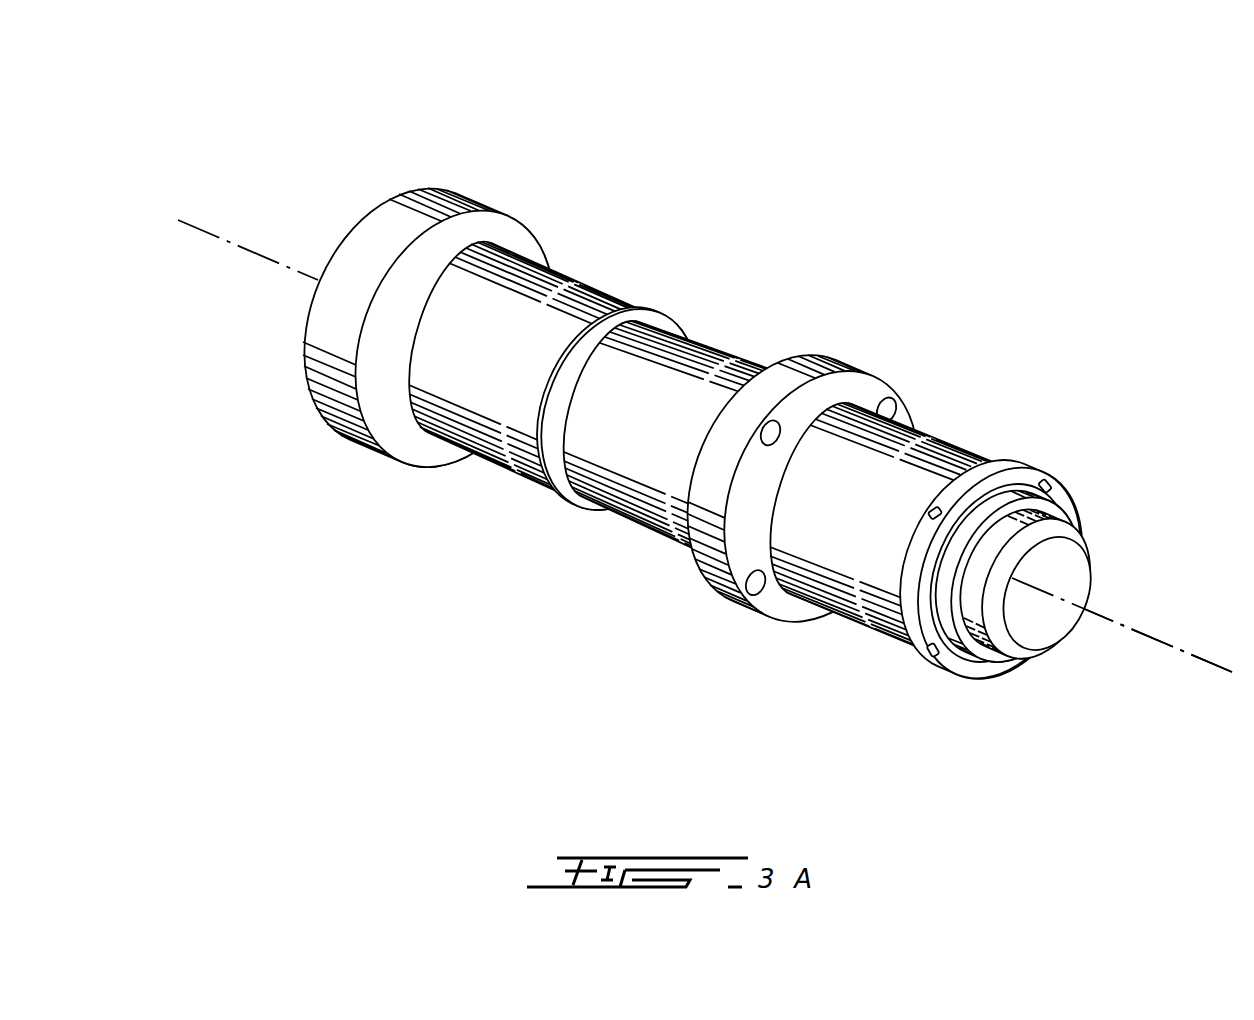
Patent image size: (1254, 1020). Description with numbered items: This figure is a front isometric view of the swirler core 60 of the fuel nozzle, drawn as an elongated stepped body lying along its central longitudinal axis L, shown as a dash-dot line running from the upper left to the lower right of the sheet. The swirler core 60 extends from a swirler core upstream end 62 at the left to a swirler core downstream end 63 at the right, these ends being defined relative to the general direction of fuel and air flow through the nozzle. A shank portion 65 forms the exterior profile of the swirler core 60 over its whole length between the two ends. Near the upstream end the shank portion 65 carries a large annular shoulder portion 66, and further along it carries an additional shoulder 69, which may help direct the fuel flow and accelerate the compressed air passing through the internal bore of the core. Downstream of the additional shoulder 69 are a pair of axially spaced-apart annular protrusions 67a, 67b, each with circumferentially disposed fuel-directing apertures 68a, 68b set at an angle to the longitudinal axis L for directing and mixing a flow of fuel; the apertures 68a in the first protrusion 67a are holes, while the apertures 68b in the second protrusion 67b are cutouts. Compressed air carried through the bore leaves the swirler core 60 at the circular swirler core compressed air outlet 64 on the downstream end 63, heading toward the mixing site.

The swirler core 60 is at (669, 429).
The swirler core upstream end 62 is at (338, 300).
The swirler core downstream end 63 is at (1016, 601).
The swirler core compressed air outlet 64 is at (1067, 573).
The shank portion 65 is at (746, 482).
The annular shoulder portion 66 is at (416, 222).
The annular protrusion 67a is at (700, 547).
The annular protrusion 67b is at (1003, 472).
The fuel-directing apertures 68a is at (756, 582).
The fuel-directing apertures 68b is at (933, 655).
The additional shoulder 69 is at (553, 468).
The longitudinal axis L is at (715, 457).